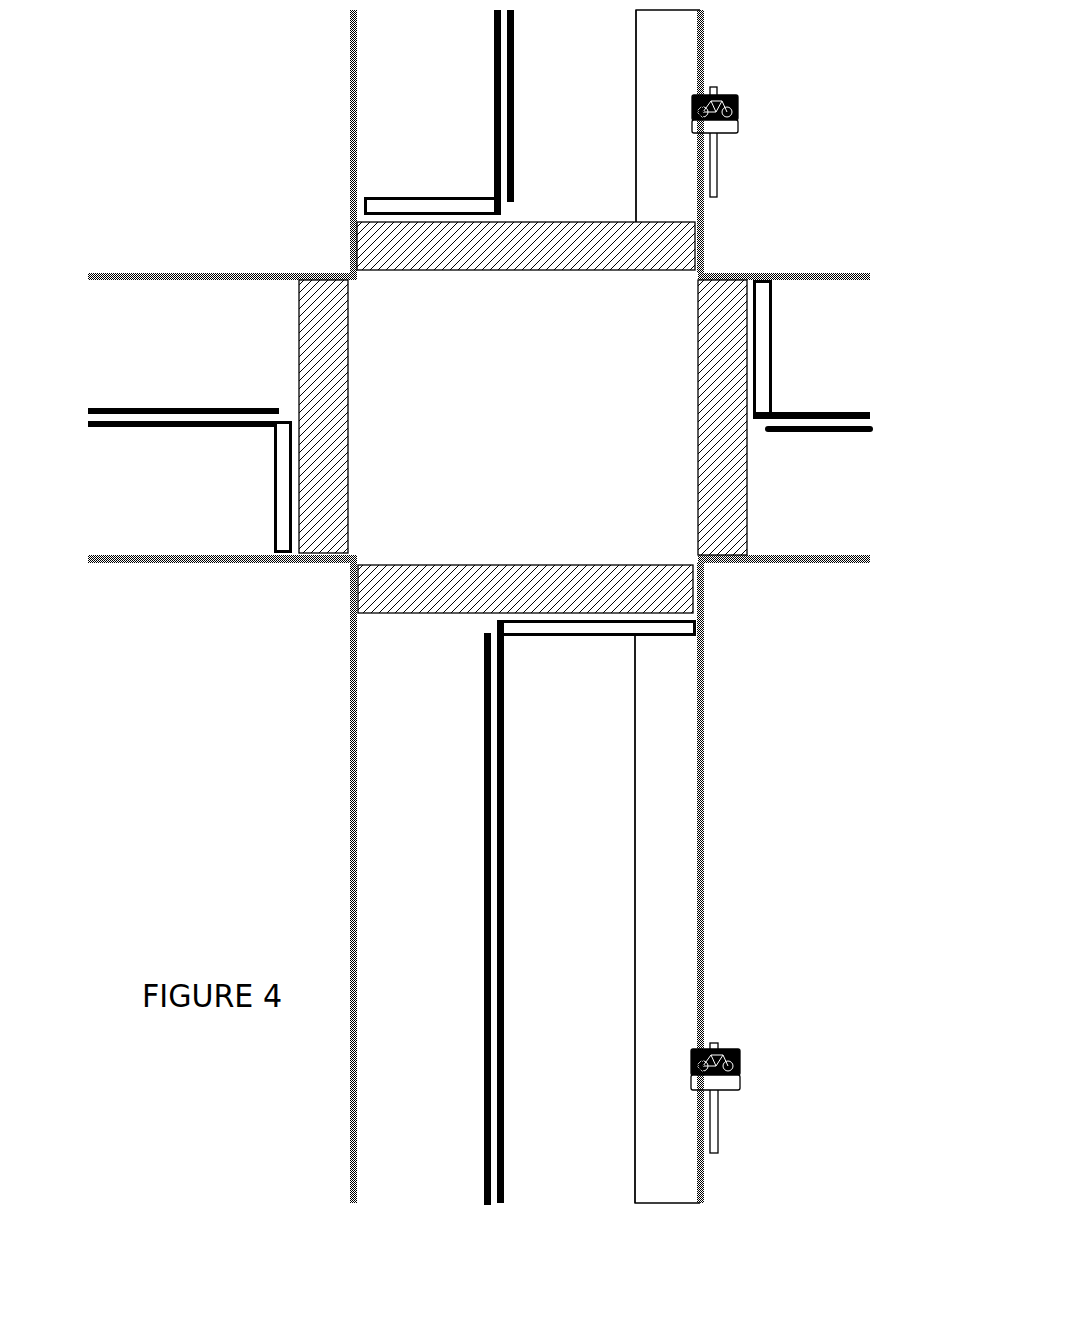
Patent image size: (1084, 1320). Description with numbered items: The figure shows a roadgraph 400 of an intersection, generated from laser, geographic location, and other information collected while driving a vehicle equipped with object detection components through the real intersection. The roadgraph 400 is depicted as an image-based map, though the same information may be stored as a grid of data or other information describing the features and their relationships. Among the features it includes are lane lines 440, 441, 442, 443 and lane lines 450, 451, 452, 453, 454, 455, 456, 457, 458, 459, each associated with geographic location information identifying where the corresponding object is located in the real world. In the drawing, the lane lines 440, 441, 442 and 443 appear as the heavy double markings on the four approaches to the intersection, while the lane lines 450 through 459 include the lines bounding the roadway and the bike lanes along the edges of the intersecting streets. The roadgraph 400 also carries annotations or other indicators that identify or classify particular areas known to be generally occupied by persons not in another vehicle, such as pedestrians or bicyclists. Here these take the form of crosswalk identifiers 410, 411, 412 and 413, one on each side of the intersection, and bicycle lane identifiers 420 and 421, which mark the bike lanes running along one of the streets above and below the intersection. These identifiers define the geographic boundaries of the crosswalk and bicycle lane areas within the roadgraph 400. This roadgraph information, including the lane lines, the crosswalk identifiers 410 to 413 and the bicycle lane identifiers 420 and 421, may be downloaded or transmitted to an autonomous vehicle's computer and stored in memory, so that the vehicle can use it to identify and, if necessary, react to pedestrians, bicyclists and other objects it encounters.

The roadgraph 400 is at (545, 428).
The crosswalk identifier 410 is at (700, 248).
The crosswalk identifier 411 is at (745, 533).
The crosswalk identifier 412 is at (355, 598).
The crosswalk identifier 413 is at (298, 518).
The bicycle lane identifier 420 is at (668, 837).
The bicycle lane identifier 421 is at (689, 30).
The lane line 440 is at (494, 100).
The lane line 441 is at (778, 412).
The lane line 442 is at (484, 763).
The lane line 443 is at (210, 408).
The lane line 450 is at (636, 78).
The lane line 451 is at (704, 72).
The lane line 452 is at (770, 274).
The lane line 453 is at (758, 563).
The lane line 454 is at (703, 690).
The lane line 455 is at (635, 705).
The lane line 456 is at (350, 733).
The lane line 457 is at (225, 556).
The lane line 458 is at (215, 272).
The lane line 459 is at (352, 70).